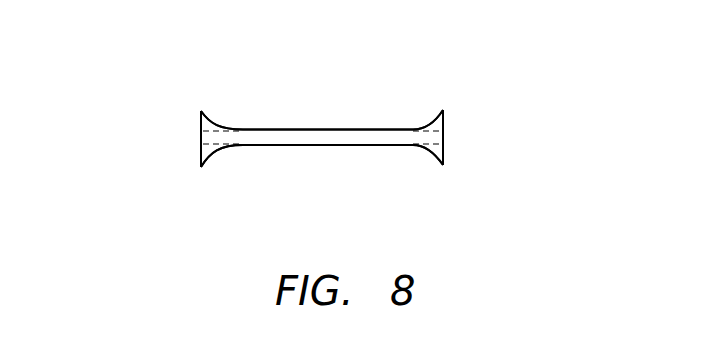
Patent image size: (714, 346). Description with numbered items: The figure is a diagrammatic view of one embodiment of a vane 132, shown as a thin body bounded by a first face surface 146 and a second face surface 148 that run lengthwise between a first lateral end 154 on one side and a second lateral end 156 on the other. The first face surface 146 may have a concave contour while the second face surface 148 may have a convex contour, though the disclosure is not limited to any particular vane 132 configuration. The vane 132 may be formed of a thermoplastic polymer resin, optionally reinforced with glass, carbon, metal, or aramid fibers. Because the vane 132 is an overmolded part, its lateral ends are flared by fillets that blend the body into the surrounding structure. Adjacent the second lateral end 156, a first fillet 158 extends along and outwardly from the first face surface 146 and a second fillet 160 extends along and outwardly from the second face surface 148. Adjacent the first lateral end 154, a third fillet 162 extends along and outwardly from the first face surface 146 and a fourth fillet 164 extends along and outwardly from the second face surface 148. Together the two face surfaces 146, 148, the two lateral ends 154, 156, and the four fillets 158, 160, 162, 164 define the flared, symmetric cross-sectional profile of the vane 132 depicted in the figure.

The vane 132 is at (142, 160).
The first face surface 146 is at (333, 146).
The second face surface 148 is at (318, 128).
The first lateral end 154 is at (198, 138).
The second lateral end 156 is at (444, 138).
The first fillet 158 is at (428, 160).
The second fillet 160 is at (430, 118).
The third fillet 162 is at (222, 152).
The fourth fillet 164 is at (221, 124).